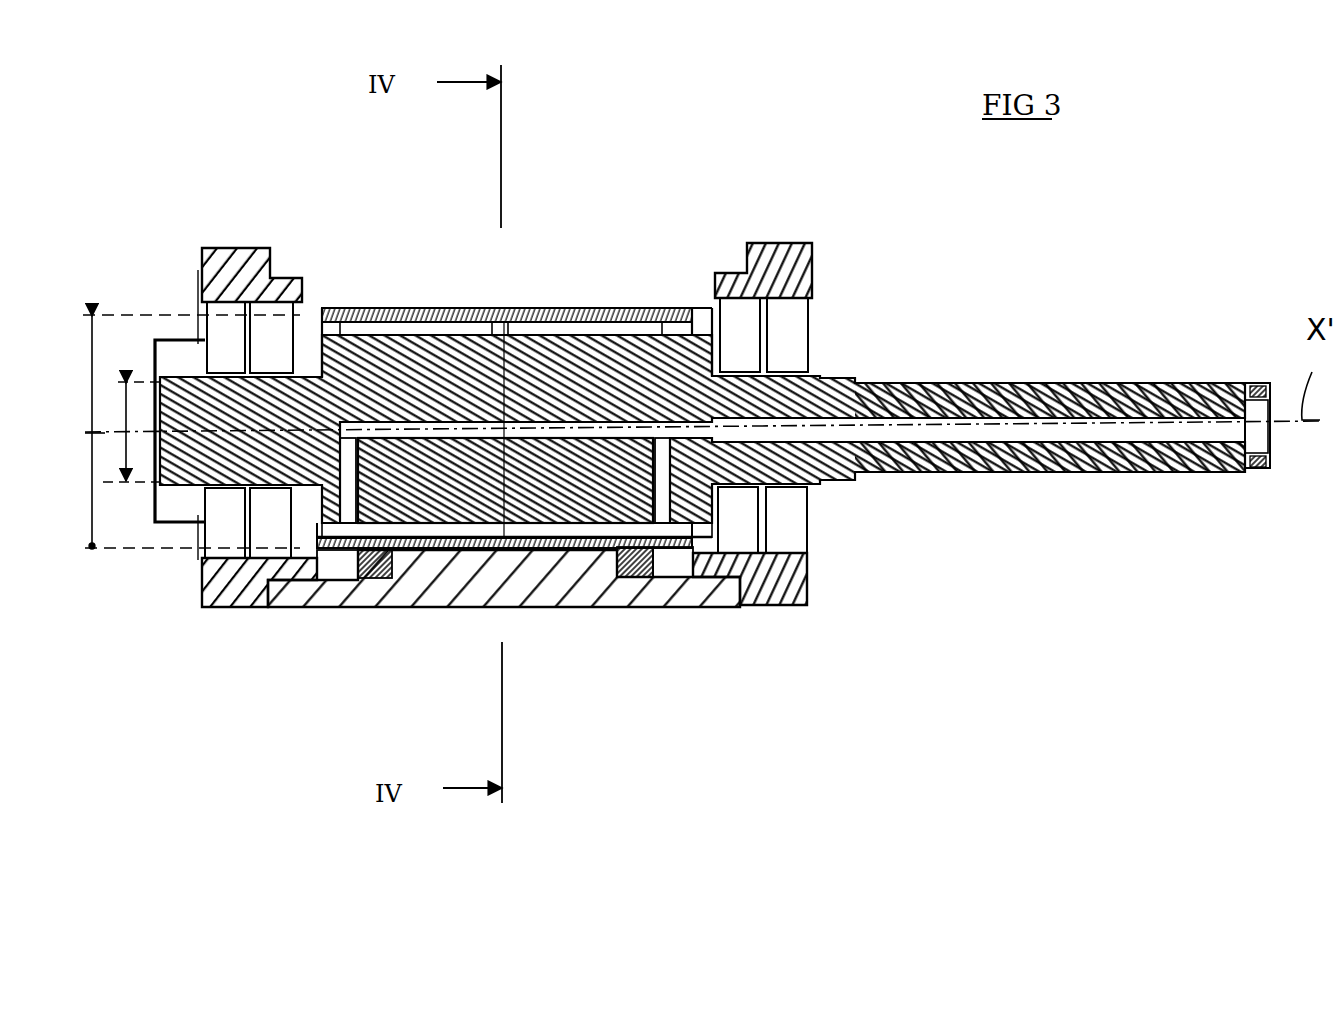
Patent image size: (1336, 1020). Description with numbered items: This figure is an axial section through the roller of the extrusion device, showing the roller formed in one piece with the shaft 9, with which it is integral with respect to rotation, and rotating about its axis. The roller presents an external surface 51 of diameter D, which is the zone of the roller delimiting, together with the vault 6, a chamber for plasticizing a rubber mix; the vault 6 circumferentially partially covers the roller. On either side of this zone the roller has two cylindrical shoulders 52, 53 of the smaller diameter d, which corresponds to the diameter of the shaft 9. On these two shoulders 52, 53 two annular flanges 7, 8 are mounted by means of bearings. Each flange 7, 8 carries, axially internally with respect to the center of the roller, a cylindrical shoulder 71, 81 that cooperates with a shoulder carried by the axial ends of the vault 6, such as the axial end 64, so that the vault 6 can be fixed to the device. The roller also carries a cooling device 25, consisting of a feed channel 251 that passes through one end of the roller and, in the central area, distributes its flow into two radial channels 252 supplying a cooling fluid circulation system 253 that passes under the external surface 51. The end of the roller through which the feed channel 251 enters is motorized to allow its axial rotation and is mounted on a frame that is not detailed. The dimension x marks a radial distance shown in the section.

The shaft 9 is at (1008, 462).
The cooling device 25 is at (598, 560).
The feed channel 251 is at (858, 424).
The radial channels 252 is at (713, 540).
The cooling fluid circulation system 253 is at (514, 507).
The external surface 51 is at (540, 308).
The cylindrical shoulder 52 is at (278, 355).
The cylindrical shoulder 53 is at (702, 357).
The annular flange 8 is at (230, 260).
The cylindrical shoulder 81 is at (284, 300).
The annular flange 7 is at (775, 243).
The cylindrical shoulder 71 is at (737, 363).
The vault 6 is at (446, 612).
The axial end 64 is at (296, 570).
The diameter D is at (93, 507).
The diameter d is at (128, 453).
The radial dimension x is at (92, 432).